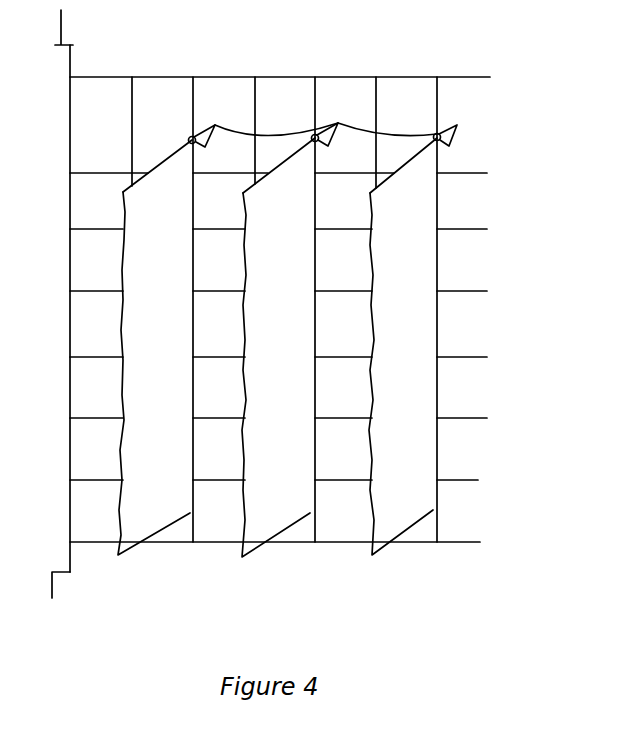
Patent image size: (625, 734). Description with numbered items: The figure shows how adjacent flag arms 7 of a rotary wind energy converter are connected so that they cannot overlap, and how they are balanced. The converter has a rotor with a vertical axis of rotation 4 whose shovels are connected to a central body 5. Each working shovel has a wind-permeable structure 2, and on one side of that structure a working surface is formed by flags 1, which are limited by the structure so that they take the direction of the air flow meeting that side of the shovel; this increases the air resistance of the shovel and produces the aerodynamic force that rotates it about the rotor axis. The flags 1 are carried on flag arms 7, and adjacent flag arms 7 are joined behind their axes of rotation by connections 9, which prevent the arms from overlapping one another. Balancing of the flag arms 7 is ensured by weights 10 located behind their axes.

The flag 1 is at (395, 490).
The wind-permeable structure 2 is at (88, 167).
The vertical axis of rotation 4 is at (54, 590).
The central body 5 is at (60, 65).
The flag arm 7 is at (168, 152).
The connection 9 is at (265, 130).
The weight 10 is at (460, 130).